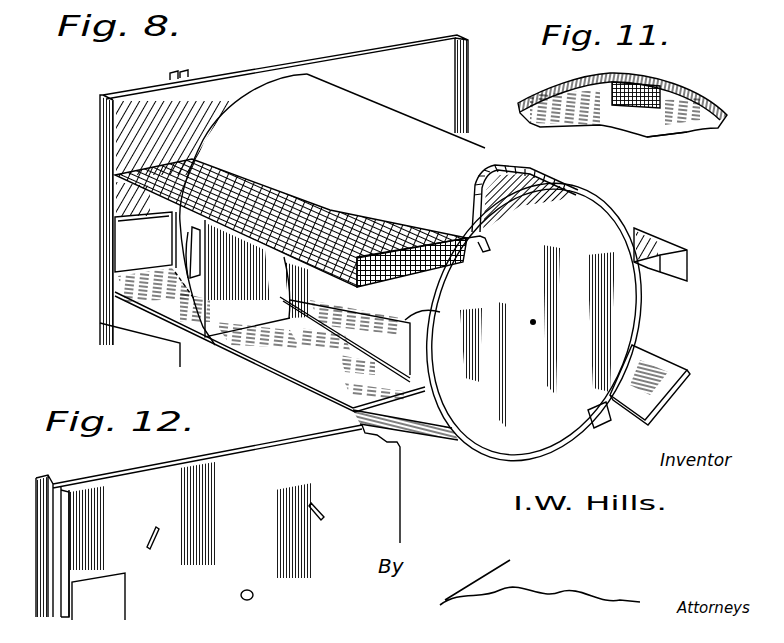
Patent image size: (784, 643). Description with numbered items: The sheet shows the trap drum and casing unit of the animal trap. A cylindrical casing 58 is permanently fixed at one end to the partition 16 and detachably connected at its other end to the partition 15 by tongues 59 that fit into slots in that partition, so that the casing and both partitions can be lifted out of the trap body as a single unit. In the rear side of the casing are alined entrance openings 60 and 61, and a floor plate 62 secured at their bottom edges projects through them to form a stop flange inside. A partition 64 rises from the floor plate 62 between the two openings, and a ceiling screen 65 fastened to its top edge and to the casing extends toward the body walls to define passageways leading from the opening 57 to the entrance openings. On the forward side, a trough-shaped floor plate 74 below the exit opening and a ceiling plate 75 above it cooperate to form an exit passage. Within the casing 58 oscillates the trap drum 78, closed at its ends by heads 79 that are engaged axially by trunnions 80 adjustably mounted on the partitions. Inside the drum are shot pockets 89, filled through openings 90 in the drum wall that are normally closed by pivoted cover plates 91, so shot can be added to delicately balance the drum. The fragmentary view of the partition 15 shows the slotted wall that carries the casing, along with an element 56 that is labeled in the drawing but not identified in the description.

In FIG. 8, the partition 16 is at (337, 56).
In FIG. 8, the cylindrical casing 58 is at (332, 257).
In FIG. 8, the ceiling screen 65 is at (313, 218).
In FIG. 8, the partition 64 is at (245, 278).
In FIG. 8, the entrance opening 61 is at (190, 250).
In FIG. 8, the floor plate 62 is at (268, 366).
In FIG. 8, the heads 79 is at (534, 322).
In FIG. 11, the heads 79 is at (700, 113).
In FIG. 8, the tongues 59 is at (483, 241).
In FIG. 8, the entrance opening 60 is at (426, 314).
In FIG. 8, the trap drum 78 is at (503, 170).
In FIG. 11, the trap drum 78 is at (697, 126).
In FIG. 8, the ceiling plate 75 is at (657, 247).
In FIG. 8, the trough-shaped floor plate 74 is at (658, 370).
In FIG. 11, the cover plates 91 is at (568, 86).
In FIG. 11, the openings 90 is at (645, 82).
In FIG. 11, the shot pockets 89 is at (655, 104).
In FIG. 12, the partition 15 is at (218, 521).
In FIG. 12, the hinge strip 56 is at (70, 522).
In FIG. 12, the opening 57 is at (127, 593).
In FIG. 12, the trunnions 80 is at (253, 593).